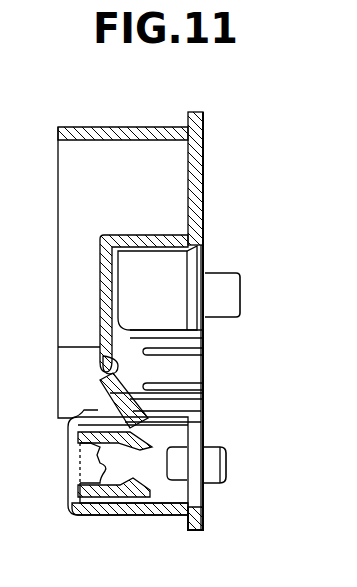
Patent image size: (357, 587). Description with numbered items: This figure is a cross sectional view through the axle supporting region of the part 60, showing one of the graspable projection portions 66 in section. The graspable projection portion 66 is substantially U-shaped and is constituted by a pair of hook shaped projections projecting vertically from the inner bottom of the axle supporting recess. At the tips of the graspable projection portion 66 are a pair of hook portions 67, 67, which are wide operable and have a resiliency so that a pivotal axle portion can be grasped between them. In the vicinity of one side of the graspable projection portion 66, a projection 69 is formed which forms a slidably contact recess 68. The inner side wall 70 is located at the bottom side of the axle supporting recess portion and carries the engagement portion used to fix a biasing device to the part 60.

The connector housing 60 is at (207, 180).
The graspable projection portion 66 is at (177, 492).
The hook portion 67 is at (153, 433).
The slidably contact recess 68 is at (95, 468).
The projection 69 is at (88, 465).
The inner side wall 70 is at (207, 403).